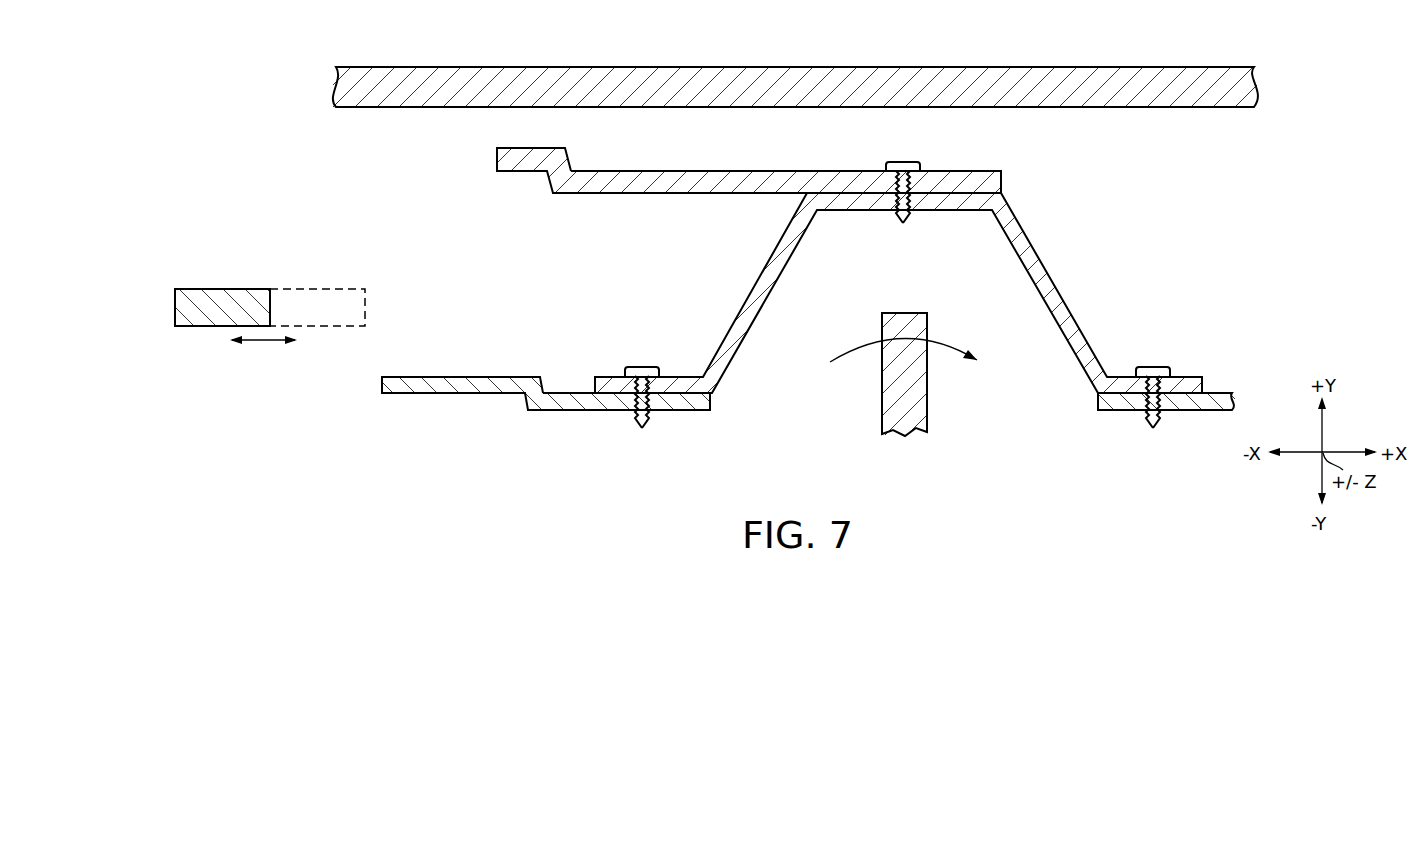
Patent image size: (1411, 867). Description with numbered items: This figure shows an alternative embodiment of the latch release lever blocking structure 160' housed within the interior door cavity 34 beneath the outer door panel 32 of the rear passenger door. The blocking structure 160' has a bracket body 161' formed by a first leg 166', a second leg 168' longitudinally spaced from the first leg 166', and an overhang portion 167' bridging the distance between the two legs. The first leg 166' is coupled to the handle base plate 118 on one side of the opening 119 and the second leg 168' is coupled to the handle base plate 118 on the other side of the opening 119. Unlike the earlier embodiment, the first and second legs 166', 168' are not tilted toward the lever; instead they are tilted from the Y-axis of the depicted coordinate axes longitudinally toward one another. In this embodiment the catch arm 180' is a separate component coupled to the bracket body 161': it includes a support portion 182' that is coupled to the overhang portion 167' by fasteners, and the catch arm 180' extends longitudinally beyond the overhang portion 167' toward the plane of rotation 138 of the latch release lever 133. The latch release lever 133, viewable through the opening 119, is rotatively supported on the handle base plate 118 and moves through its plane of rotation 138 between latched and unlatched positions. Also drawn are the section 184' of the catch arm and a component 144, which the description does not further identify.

The outer door panel 32 is at (805, 66).
The interior door cavity 34 is at (747, 75).
The catch arm 180' is at (902, 125).
The support portion 182' is at (786, 156).
The mounting plate thick portion 184' is at (526, 187).
The latch release lever blocking structure 160' is at (919, 288).
The bracket body 161' is at (1034, 237).
The first leg 166' is at (1120, 325).
The overhang portion 167' is at (904, 230).
The second leg 168' is at (719, 293).
The handle base plate 118 is at (525, 403).
The opening 119 is at (710, 398).
The seat belt anchor / post 144 is at (904, 313).
The latch release lever 133 is at (175, 305).
The plane of rotation 138 is at (263, 341).